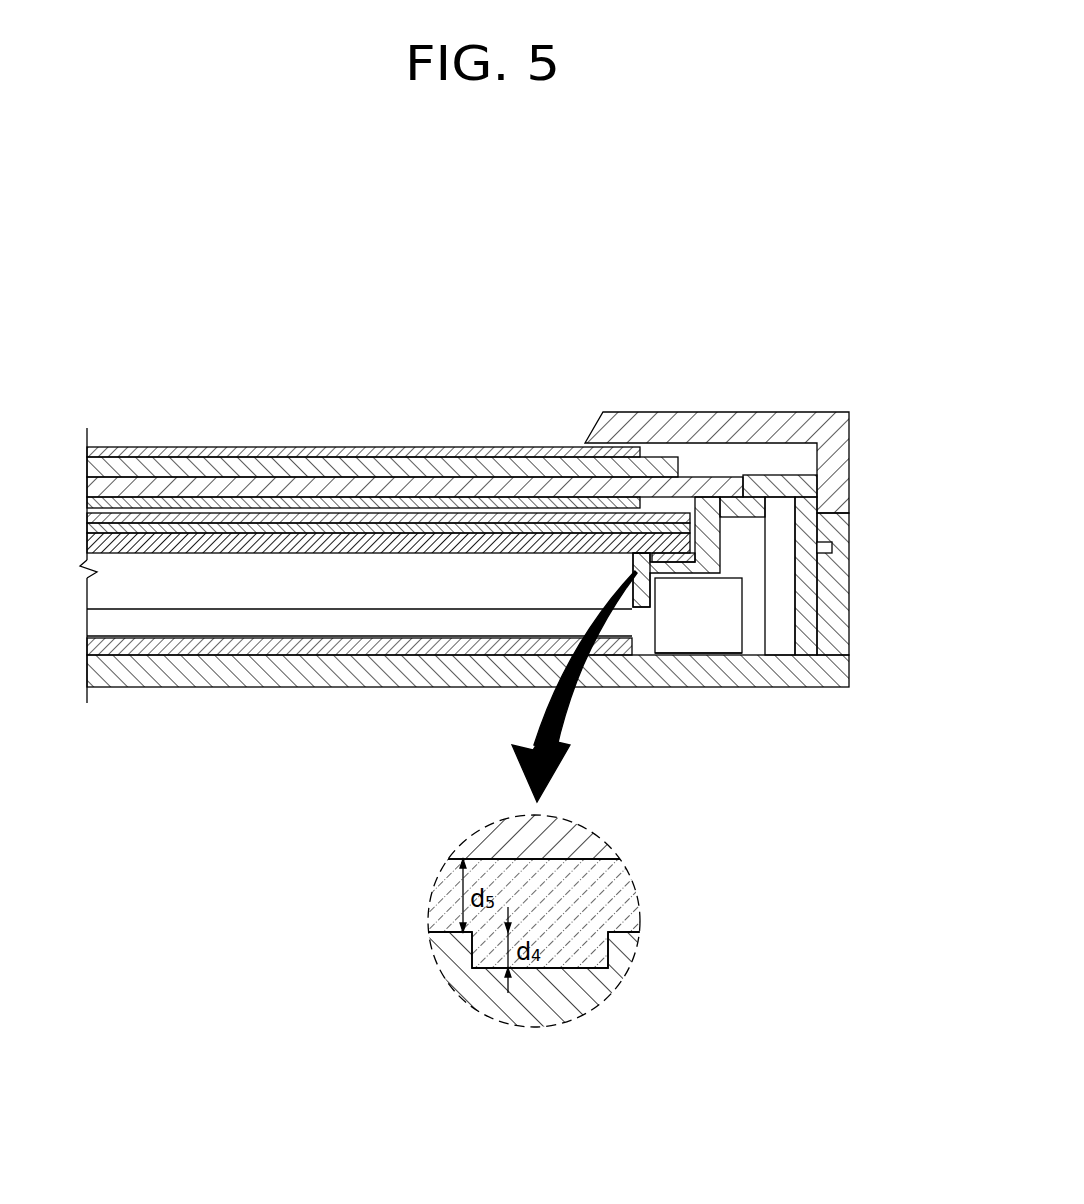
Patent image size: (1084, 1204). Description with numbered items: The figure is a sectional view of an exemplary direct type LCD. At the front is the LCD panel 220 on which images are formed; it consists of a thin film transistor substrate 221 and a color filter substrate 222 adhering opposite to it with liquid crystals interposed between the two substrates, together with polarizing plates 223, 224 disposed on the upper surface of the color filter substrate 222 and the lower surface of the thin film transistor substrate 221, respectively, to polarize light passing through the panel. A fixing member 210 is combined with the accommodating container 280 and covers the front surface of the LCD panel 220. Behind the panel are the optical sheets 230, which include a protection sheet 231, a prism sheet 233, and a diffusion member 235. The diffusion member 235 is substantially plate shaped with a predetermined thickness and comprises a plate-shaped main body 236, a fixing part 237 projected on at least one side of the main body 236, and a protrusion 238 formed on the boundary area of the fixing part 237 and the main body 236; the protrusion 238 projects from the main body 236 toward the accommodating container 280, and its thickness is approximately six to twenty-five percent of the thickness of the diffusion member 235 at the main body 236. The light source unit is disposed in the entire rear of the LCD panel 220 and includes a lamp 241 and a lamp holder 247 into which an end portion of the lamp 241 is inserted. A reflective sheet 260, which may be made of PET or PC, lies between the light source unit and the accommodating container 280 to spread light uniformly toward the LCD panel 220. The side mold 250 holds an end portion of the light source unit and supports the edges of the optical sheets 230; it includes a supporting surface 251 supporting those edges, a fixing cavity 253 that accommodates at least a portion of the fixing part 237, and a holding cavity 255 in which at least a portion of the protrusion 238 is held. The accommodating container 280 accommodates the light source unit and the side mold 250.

The fixing member 210 is at (805, 428).
The LCD panel 220 is at (297, 330).
The thin film transistor substrate 221 is at (291, 488).
The color filter substrate 222 is at (237, 464).
The polarizing plate 223 is at (182, 452).
The polarizing plate 224 is at (125, 500).
The optical sheets 230 is at (655, 284).
The protection sheet 231 is at (500, 518).
The prism sheet 233 is at (448, 530).
The diffusion member 235 is at (722, 327).
The main body 236 is at (582, 528).
The fixing part 237 is at (686, 518).
The protrusion 238 is at (656, 523).
The lamp 241 is at (457, 630).
The lamp holder 247 is at (725, 620).
The side mold 250 is at (820, 506).
The supporting surface 251 is at (638, 605).
The fixing cavity 253 is at (712, 610).
The holding cavity 255 is at (672, 650).
The reflective sheet 260 is at (372, 660).
The accommodating container 280 is at (828, 682).